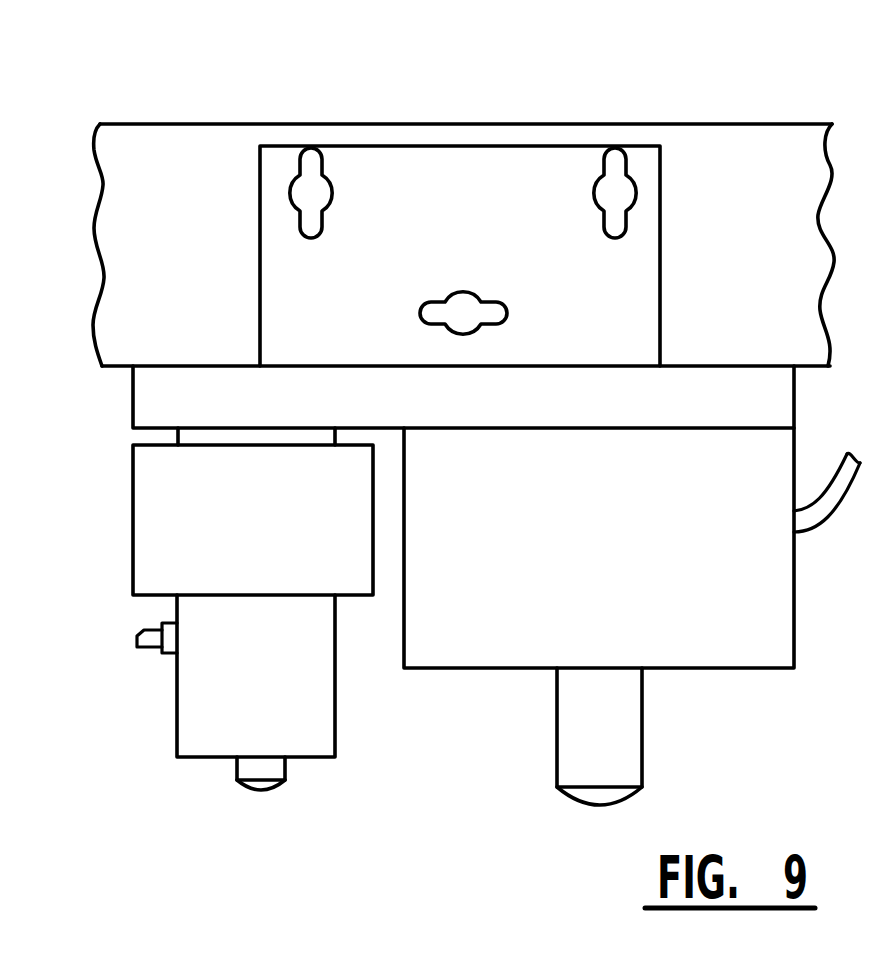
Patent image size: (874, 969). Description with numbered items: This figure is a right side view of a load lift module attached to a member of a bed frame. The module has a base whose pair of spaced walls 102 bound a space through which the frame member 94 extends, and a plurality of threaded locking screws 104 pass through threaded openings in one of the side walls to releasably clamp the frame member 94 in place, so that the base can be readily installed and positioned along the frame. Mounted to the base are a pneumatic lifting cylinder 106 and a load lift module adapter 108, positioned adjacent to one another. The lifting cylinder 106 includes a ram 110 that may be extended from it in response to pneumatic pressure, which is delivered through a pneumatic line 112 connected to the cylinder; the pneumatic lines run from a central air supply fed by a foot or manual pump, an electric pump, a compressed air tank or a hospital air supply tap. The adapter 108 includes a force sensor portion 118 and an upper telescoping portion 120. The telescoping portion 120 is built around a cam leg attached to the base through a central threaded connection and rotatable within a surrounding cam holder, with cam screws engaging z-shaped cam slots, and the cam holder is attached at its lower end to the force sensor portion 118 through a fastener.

The frame member 94 is at (738, 118).
The spaced walls 102 is at (660, 275).
The threaded locking screws 104 is at (593, 192).
The pneumatic lifting cylinder 106 is at (613, 569).
The load lift module adapter 108 is at (272, 551).
The ram 110 is at (642, 742).
The pneumatic line 112 is at (812, 527).
The force sensor portion 118 is at (335, 738).
The upper telescoping portion 120 is at (152, 567).